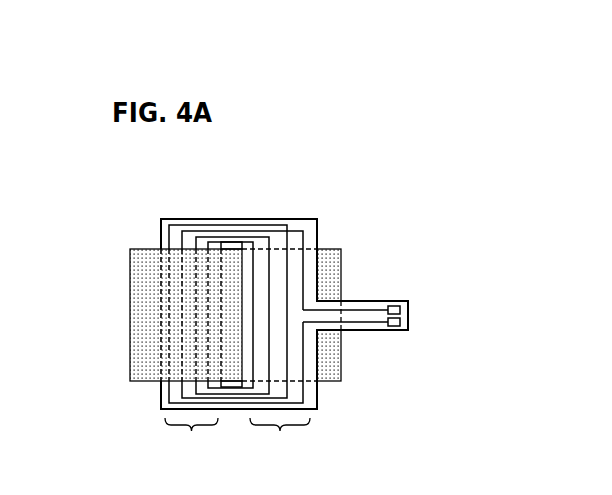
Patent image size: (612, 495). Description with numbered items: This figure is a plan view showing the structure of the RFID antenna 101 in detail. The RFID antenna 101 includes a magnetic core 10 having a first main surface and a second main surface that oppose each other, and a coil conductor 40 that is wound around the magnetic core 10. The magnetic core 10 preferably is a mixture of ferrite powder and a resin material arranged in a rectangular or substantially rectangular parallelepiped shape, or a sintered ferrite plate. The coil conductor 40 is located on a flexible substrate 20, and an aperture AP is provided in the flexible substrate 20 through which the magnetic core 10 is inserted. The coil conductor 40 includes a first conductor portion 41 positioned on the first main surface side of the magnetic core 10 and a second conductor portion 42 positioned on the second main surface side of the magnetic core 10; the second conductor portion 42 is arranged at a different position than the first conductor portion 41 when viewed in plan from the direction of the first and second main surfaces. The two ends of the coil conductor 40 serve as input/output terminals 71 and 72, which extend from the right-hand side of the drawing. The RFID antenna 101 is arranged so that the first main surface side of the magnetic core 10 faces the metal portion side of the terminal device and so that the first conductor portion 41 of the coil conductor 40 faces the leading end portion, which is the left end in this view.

The RFID antenna 101 is at (446, 140).
The magnetic core 10 is at (130, 249).
The flexible substrate 20 is at (318, 220).
The coil conductor 40 is at (271, 224).
The aperture AP is at (238, 243).
The input/output terminal 71 is at (408, 309).
The input/output terminal 72 is at (408, 322).
The first conductor portion 41 is at (191, 440).
The second conductor portion 42 is at (280, 440).